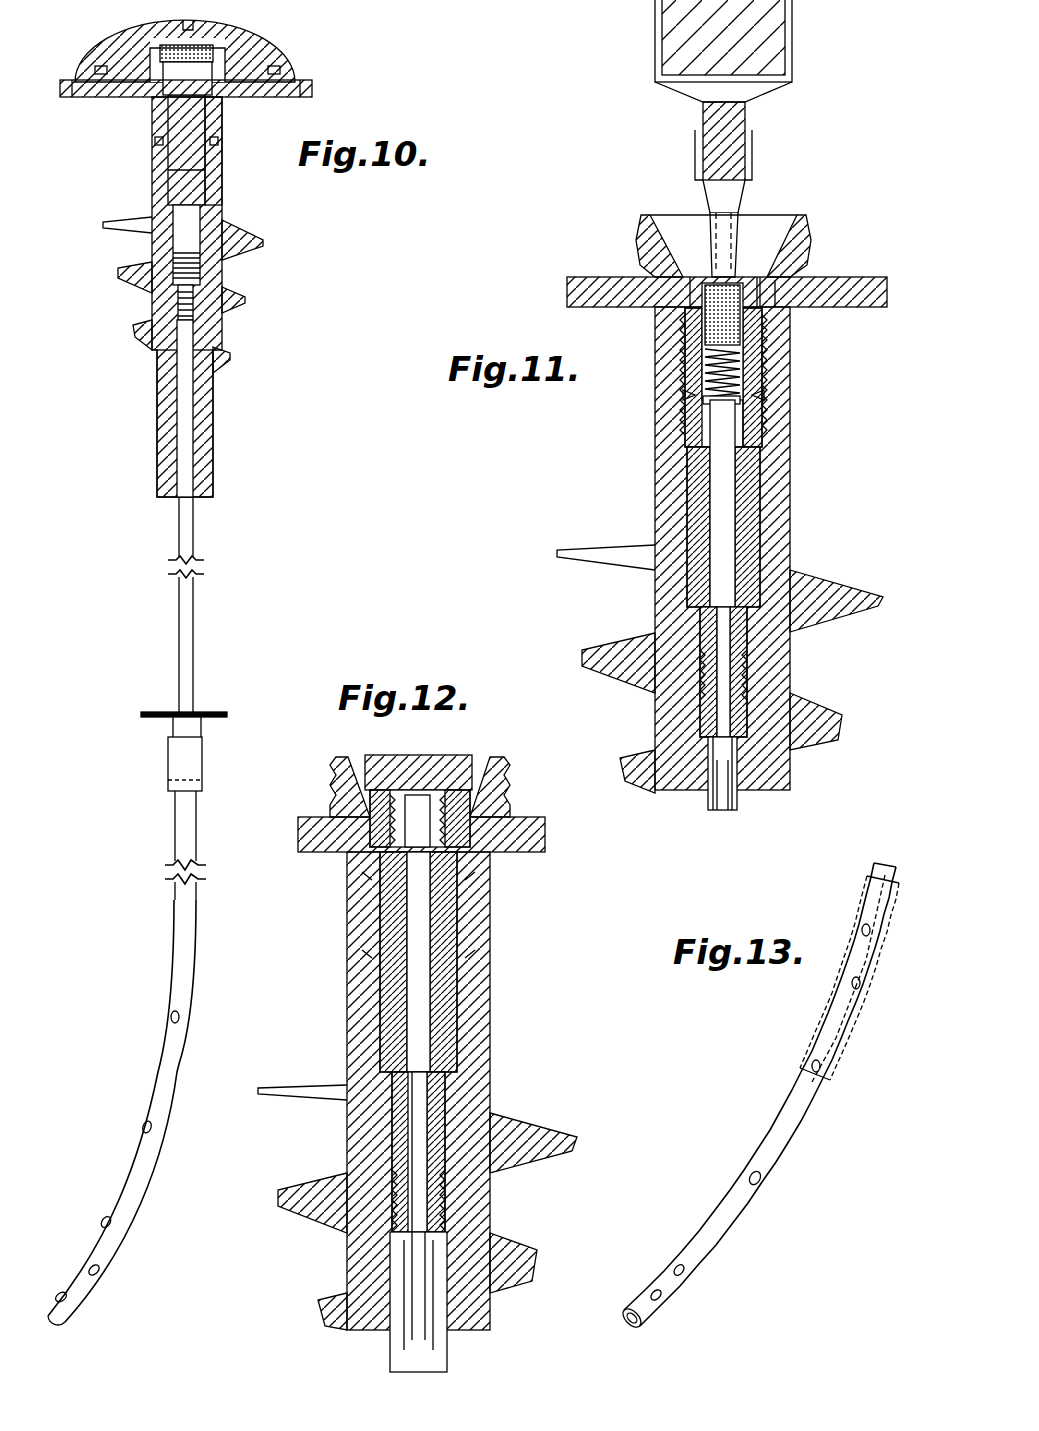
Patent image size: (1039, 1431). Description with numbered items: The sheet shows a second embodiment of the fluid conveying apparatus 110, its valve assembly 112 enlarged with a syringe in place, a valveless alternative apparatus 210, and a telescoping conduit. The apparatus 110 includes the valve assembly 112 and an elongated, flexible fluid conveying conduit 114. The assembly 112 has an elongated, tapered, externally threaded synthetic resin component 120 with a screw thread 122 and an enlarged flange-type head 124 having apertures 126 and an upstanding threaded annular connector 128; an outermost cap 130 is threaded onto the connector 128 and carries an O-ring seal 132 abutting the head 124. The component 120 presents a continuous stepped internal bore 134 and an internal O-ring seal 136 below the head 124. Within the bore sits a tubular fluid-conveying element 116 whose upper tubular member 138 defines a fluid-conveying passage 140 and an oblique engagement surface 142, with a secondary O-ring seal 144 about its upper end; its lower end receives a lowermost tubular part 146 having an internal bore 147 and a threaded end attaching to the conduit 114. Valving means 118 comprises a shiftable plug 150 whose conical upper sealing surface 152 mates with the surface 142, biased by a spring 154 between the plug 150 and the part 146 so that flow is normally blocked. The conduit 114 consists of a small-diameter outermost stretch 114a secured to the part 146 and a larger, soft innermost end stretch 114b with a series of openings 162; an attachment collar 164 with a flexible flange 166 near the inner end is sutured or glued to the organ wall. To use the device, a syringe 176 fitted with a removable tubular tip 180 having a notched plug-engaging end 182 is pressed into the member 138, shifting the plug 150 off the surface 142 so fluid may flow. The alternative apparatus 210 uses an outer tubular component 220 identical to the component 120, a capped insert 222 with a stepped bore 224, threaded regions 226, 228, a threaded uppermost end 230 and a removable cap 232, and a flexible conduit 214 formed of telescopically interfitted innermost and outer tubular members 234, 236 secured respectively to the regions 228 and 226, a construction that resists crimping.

In FIG. 10, the fluid conveying apparatus 110 is at (328, 67).
In FIG. 10, the valve assembly 112 is at (116, 290).
In FIG. 11, the valve assembly 112 is at (831, 564).
In FIG. 10, the fluid conveying conduit 114 is at (203, 602).
In FIG. 11, the fluid conveying conduit 114 is at (711, 802).
In FIG. 10, the outermost stretch 114a is at (177, 602).
In FIG. 10, the innermost end stretch 114b is at (174, 845).
In FIG. 10, the tubular fluid-conveying element 116 is at (214, 173).
In FIG. 11, the tubular fluid-conveying element 116 is at (765, 436).
In FIG. 11, the valving means 118 is at (688, 290).
In FIG. 10, the externally threaded synthetic resin component 120 is at (214, 419).
In FIG. 10, the screw thread 122 is at (262, 245).
In FIG. 11, the screw thread 122 is at (818, 708).
In FIG. 10, the flange-type head 124 is at (105, 92).
In FIG. 11, the flange-type head 124 is at (567, 290).
In FIG. 10, the apertures 126 is at (66, 97).
In FIG. 10, the threaded annular connector 128 is at (214, 56).
In FIG. 11, the threaded annular connector 128 is at (805, 232).
In FIG. 10, the outermost cap 130 is at (120, 48).
In FIG. 10, the O-ring seal 132 is at (270, 70).
In FIG. 10, the stepped internal bore 134 is at (177, 405).
In FIG. 11, the stepped internal bore 134 is at (740, 790).
In FIG. 10, the internal O-ring seal 136 is at (156, 140).
In FIG. 11, the internal O-ring seal 136 is at (681, 394).
In FIG. 10, the upper tubular member 138 is at (183, 32).
In FIG. 11, the upper tubular member 138 is at (750, 405).
In FIG. 11, the fluid-conveying passage 140 is at (745, 362).
In FIG. 11, the engagement surface 142 is at (774, 286).
In FIG. 10, the secondary O-ring seal 144 is at (210, 100).
In FIG. 11, the secondary O-ring seal 144 is at (688, 312).
In FIG. 10, the lowermost tubular part 146 is at (176, 181).
In FIG. 11, the lowermost tubular part 146 is at (688, 480).
In FIG. 11, the internal bore 147 is at (718, 570).
In FIG. 11, the shiftable plug 150 is at (745, 322).
In FIG. 11, the conical upper sealing surface 152 is at (707, 262).
In FIG. 11, the spring 154 is at (745, 402).
In FIG. 10, the openings 162 is at (146, 1129).
In FIG. 10, the attachment collar 164 is at (217, 707).
In FIG. 10, the flexible flange 166 is at (140, 714).
In FIG. 11, the syringe 176 is at (655, 25).
In FIG. 11, the tubular tip 180 is at (752, 145).
In FIG. 11, the plug-engaging end 182 is at (739, 232).
In FIG. 12, the apparatus 210 is at (513, 772).
In FIG. 12, the flexible conduit 214 is at (385, 1358).
In FIG. 13, the flexible conduit 214 is at (738, 1139).
In FIG. 12, the outer tubular component 220 is at (489, 1015).
In FIG. 12, the capped insert 222 is at (439, 906).
In FIG. 12, the stepped bore 224 is at (399, 968).
In FIG. 12, the threaded region 226 is at (439, 1206).
In FIG. 12, the threaded region 228 is at (401, 1255).
In FIG. 12, the threaded uppermost end 230 is at (461, 815).
In FIG. 12, the removable cap 232 is at (394, 757).
In FIG. 12, the innermost tubular member 234 is at (427, 1333).
In FIG. 13, the innermost tubular member 234 is at (795, 1050).
In FIG. 12, the outer tubular member 236 is at (441, 1352).
In FIG. 13, the outer tubular member 236 is at (820, 1060).